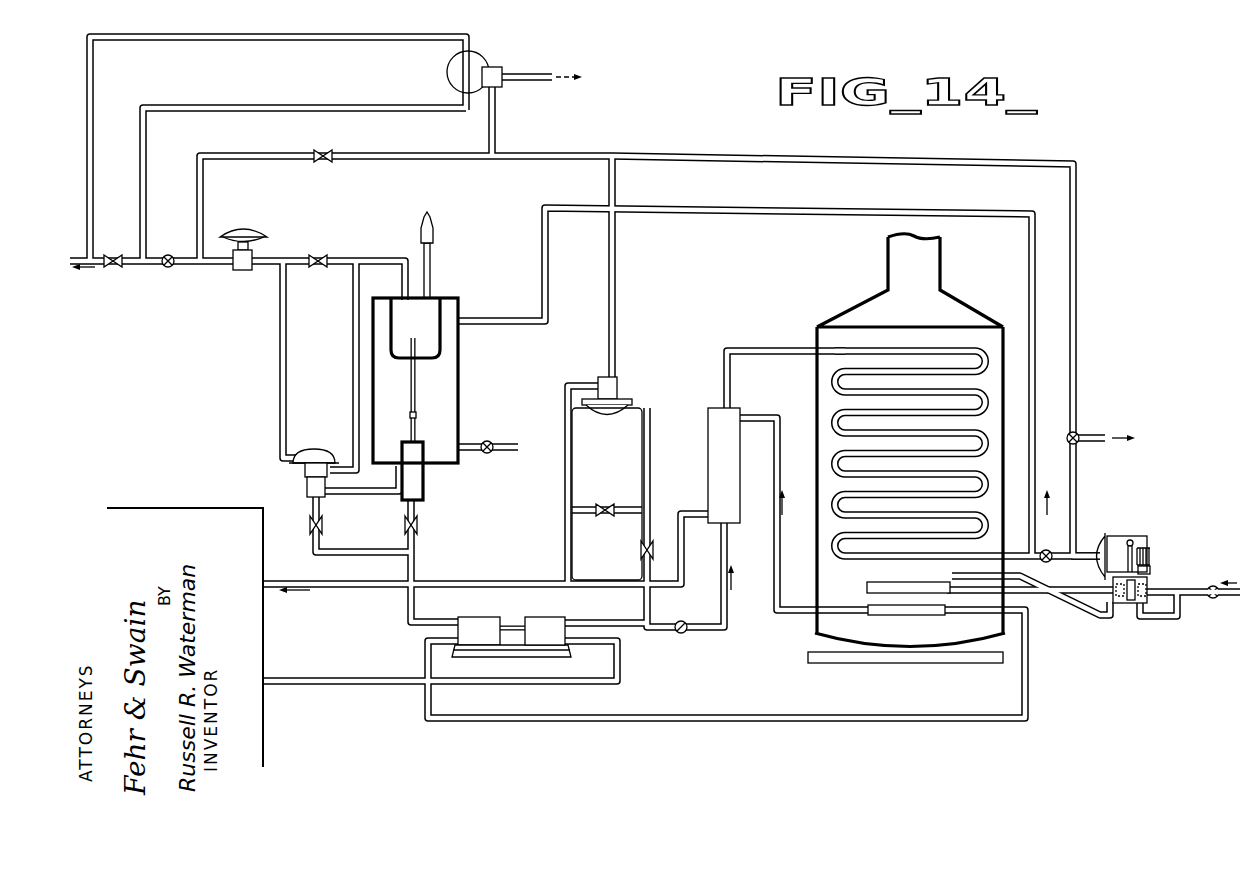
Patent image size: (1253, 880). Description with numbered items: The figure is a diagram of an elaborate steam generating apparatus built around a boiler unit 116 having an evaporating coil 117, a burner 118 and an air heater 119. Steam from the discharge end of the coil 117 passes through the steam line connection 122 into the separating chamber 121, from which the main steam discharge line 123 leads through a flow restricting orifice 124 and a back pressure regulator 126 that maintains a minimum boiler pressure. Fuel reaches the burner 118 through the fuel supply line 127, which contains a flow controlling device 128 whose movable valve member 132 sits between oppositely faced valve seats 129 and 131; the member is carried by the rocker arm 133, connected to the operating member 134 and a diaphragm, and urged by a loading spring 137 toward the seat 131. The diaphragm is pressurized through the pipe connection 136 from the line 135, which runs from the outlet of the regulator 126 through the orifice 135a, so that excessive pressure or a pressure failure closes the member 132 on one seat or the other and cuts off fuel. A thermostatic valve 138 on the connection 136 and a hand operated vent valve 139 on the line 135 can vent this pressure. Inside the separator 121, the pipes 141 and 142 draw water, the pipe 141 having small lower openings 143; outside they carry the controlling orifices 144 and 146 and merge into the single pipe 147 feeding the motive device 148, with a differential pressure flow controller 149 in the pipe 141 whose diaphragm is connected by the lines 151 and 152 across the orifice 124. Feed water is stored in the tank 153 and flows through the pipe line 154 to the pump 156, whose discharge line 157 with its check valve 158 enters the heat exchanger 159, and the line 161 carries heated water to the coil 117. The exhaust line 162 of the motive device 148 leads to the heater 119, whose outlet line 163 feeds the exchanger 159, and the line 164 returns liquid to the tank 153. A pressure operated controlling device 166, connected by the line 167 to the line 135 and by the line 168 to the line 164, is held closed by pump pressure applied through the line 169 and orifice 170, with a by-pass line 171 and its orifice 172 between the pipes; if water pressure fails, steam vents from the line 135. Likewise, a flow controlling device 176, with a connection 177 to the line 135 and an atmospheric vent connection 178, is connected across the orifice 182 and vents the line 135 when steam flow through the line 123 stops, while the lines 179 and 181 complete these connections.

The boiler unit 116 is at (864, 302).
The evaporating coil 117 is at (953, 350).
The burner 118 is at (868, 586).
The air heater 119 is at (875, 619).
The separating chamber 121 is at (462, 366).
The steam line connection 122 is at (798, 208).
The main steam discharge line 123 is at (216, 266).
The flow restricting orifice 124 is at (327, 255).
The back pressure regulator 126 is at (252, 229).
The fuel supply line 127 is at (1206, 599).
The flow controlling device 128 is at (1110, 530).
The valve seat 129 is at (1142, 608).
The valve seat 131 is at (1114, 606).
The movable valve member 132 is at (1128, 606).
The rocker arm 133 is at (1152, 575).
The operating member 134 is at (1120, 545).
The line 135 is at (259, 152).
The flow restricting orifice 135a is at (325, 163).
The pipe connection 136 is at (1078, 552).
The loading spring 137 is at (1150, 546).
The valve 138 is at (1049, 561).
The hand operated vent valve 139 is at (1079, 434).
The pipe 141 is at (418, 390).
The pipe 142 is at (425, 489).
The small lower openings 143 is at (417, 415).
The controlling orifice 144 is at (324, 528).
The controlling orifice 146 is at (420, 528).
The single pipe 147 is at (406, 603).
The motive device 148 is at (481, 609).
The differential pressure flow controller 149 is at (334, 437).
The line 151 is at (279, 367).
The line 152 is at (352, 367).
The tank 153 is at (266, 646).
The pipe line 154 is at (358, 684).
The pump 156 is at (551, 609).
The discharge line 157 is at (607, 619).
The check valve 158 is at (680, 633).
The heat exchanger 159 is at (707, 436).
The line 161 is at (770, 339).
The exhaust line 162 is at (736, 723).
The line 163 is at (778, 616).
The line 164 is at (530, 575).
The pressure operated controlling device 166 is at (624, 400).
The line 167 is at (616, 278).
The line 168 is at (564, 489).
The line 169 is at (651, 489).
The flow control orifice 170 is at (641, 553).
The by-pass line 171 is at (581, 512).
The flow restricting orifice 172 is at (605, 507).
The flow controlling device 176 is at (457, 82).
The connection 177 is at (497, 132).
The atmospheric vent connection 178 is at (530, 74).
The conduit 179 is at (262, 98).
The conduit 181 is at (161, 40).
The flow restricting orifice 182 is at (113, 267).